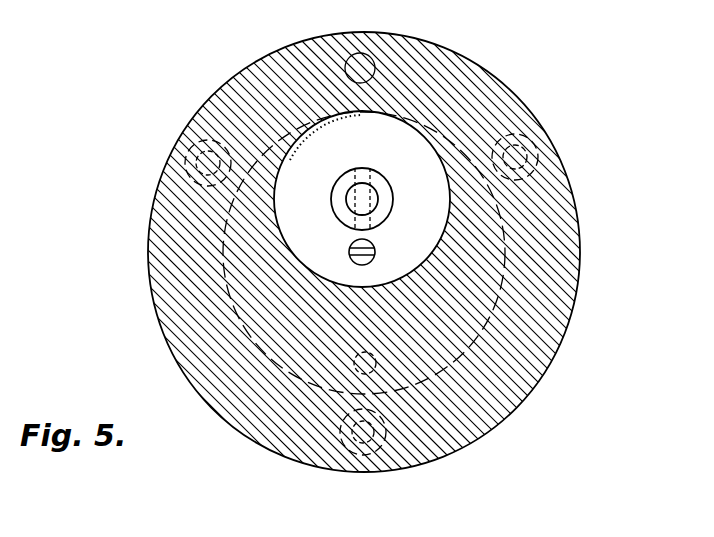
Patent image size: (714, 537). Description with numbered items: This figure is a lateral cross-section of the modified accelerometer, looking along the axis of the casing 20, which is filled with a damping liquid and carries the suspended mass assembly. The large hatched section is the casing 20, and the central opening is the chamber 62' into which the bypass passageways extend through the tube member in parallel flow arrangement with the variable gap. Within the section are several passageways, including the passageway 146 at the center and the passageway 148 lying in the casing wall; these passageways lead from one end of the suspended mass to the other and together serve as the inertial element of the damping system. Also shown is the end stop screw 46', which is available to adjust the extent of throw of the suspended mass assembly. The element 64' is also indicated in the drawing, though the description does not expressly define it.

The casing 20 is at (578, 222).
The chamber 62' is at (387, 49).
The hub 64' is at (363, 187).
The passageway 146 is at (373, 206).
The end stop screw 46' is at (380, 252).
The passageway 148 is at (375, 356).